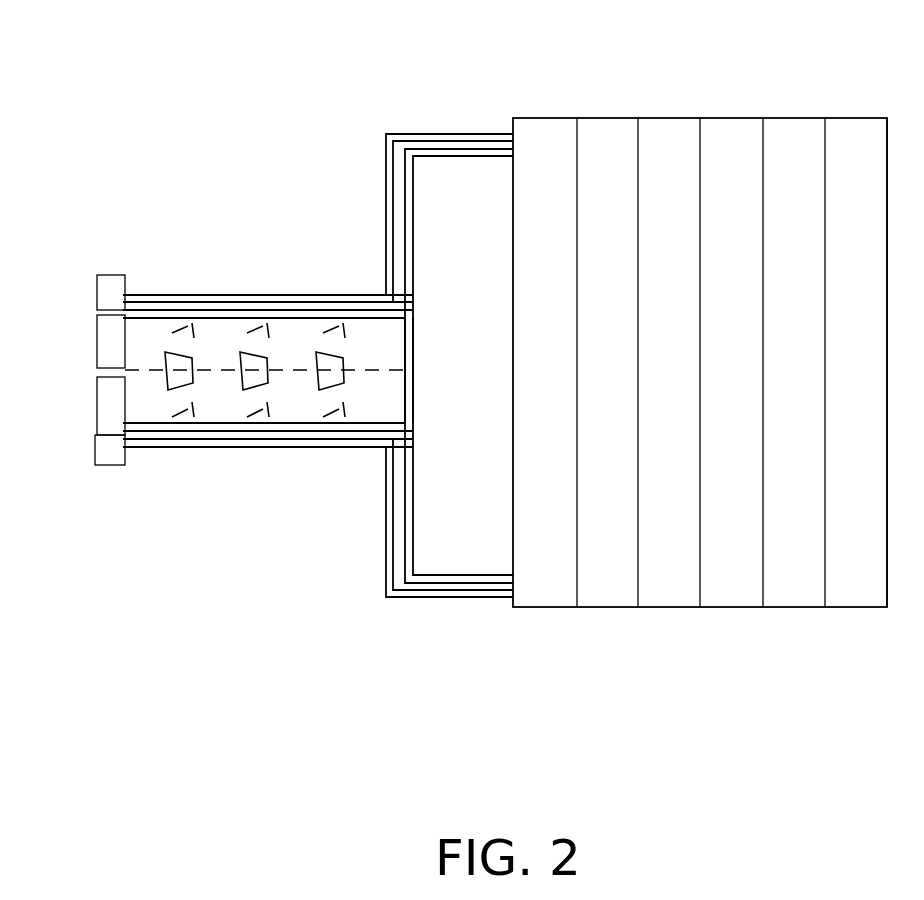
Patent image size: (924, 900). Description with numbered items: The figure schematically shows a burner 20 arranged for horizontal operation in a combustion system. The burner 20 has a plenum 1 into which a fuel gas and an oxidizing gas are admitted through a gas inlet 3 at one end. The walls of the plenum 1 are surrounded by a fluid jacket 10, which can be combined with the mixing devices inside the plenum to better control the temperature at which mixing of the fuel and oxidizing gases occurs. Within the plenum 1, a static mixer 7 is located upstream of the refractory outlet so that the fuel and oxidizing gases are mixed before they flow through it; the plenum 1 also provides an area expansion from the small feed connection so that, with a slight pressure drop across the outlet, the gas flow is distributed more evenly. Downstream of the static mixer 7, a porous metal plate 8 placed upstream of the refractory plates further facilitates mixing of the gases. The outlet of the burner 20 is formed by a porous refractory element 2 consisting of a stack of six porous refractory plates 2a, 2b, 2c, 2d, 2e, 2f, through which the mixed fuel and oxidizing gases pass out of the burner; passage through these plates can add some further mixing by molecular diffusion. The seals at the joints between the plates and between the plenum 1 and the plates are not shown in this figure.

The plenum 1 is at (208, 424).
The porous refractory element 2 is at (700, 350).
The porous refractory plate 2a is at (856, 607).
The porous refractory plate 2b is at (794, 607).
The porous refractory plate 2c is at (731, 607).
The porous refractory plate 2d is at (668, 607).
The porous refractory plate 2e is at (605, 607).
The porous refractory plate 2f is at (538, 607).
The gas inlet 3 is at (98, 373).
The static mixer 7 is at (364, 322).
The porous metal plate 8 is at (416, 373).
The fluid jacket 10 is at (226, 295).
The burner 20 is at (429, 180).